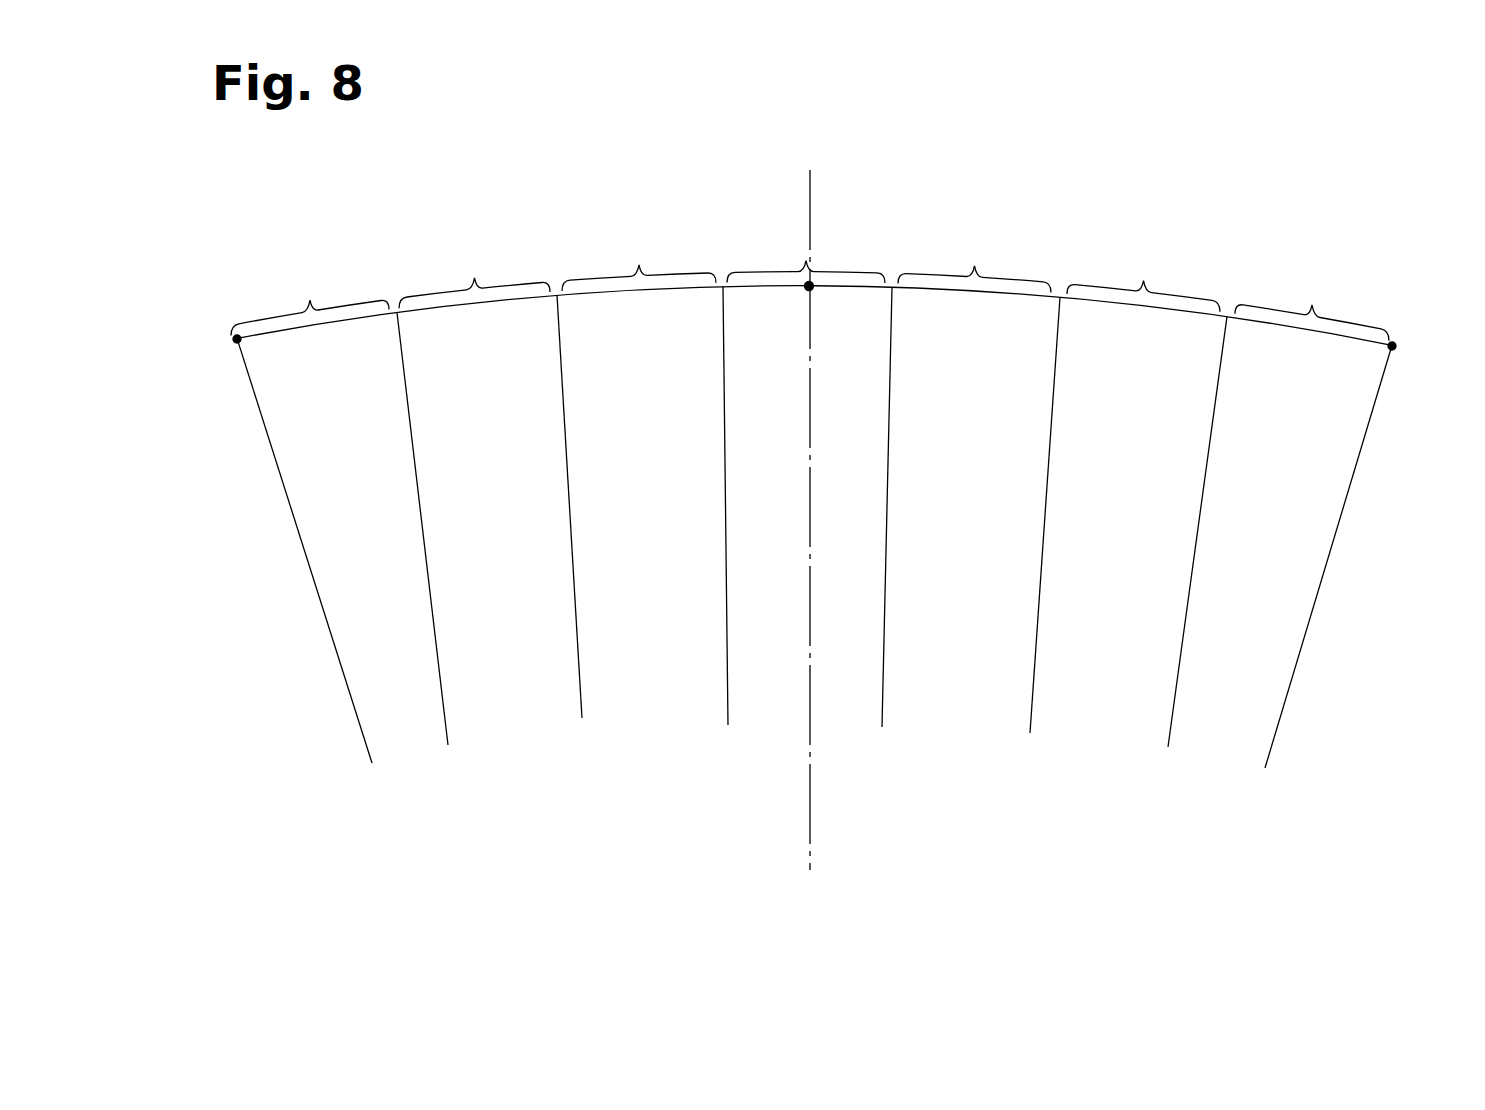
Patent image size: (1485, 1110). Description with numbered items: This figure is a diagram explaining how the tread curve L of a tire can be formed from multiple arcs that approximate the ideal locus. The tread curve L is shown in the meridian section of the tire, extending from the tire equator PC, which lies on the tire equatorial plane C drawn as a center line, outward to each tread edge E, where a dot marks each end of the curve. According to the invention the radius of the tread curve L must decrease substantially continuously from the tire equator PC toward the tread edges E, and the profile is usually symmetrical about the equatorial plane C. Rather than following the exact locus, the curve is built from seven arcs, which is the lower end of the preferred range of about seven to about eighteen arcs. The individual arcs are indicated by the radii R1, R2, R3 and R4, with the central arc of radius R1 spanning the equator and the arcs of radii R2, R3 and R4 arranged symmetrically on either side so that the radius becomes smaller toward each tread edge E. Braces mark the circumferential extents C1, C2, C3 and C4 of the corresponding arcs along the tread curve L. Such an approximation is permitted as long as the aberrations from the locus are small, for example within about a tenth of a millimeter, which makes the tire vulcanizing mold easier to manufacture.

The tire equatorial plane C is at (811, 520).
The tread curve L is at (1327, 332).
The tread edge E is at (233, 337).
The tire equator PC is at (808, 283).
The first region R1 is at (853, 287).
The second region R2 is at (643, 290).
The third region R3 is at (478, 303).
The fourth region R4 is at (322, 324).
The first section C1 is at (806, 255).
The second section C2 is at (806, 260).
The third section C3 is at (809, 275).
The fourth section C4 is at (810, 302).